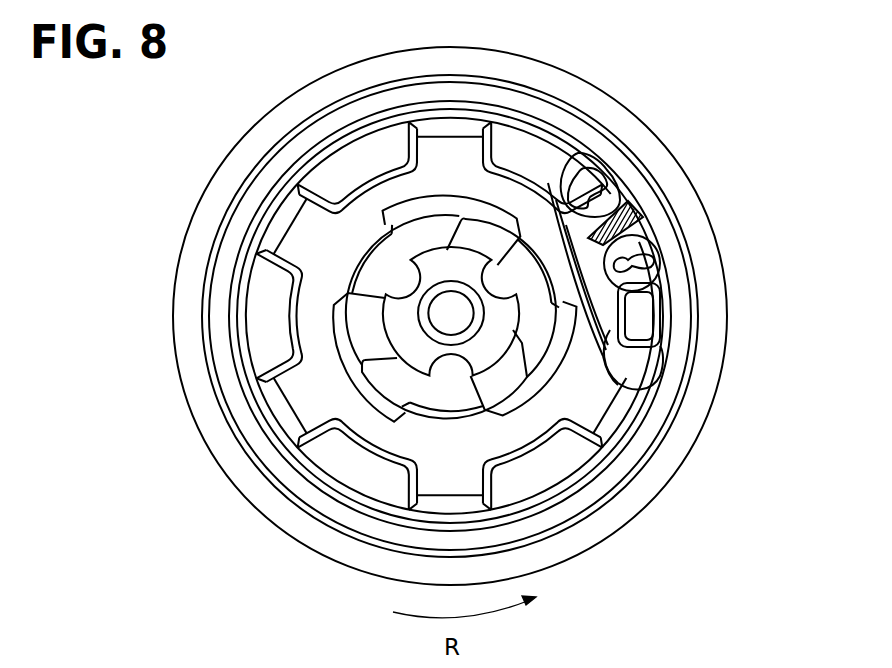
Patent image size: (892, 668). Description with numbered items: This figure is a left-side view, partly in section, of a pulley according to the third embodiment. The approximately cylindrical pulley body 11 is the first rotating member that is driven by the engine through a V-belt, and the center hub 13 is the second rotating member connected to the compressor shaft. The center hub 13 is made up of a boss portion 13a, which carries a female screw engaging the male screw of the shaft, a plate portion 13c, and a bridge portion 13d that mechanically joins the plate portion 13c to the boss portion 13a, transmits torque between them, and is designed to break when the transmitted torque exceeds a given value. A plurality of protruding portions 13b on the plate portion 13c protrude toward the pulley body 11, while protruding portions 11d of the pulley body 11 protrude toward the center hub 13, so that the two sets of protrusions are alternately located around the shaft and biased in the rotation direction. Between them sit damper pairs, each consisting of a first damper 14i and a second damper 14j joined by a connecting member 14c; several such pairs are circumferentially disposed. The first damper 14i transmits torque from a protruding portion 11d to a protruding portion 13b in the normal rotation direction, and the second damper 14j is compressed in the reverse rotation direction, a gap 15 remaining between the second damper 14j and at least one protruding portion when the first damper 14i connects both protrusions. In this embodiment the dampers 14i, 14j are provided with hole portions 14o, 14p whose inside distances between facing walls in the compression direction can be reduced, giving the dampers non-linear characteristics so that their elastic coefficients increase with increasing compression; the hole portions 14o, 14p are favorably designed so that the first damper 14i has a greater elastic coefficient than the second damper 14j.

The pulley body 11 is at (199, 214).
The protruding portions 11d is at (662, 308).
The center hub 13 is at (452, 170).
The boss portion 13a is at (482, 357).
The protruding portions 13b is at (655, 243).
The plate portion 13c is at (576, 407).
The bridge portion 13d is at (377, 355).
The connecting member 14c is at (650, 323).
The first damper 14i is at (654, 268).
The second damper 14j is at (596, 166).
The hole portion 14o is at (659, 252).
The hole portion 14p is at (600, 192).
The gap 15 is at (636, 210).